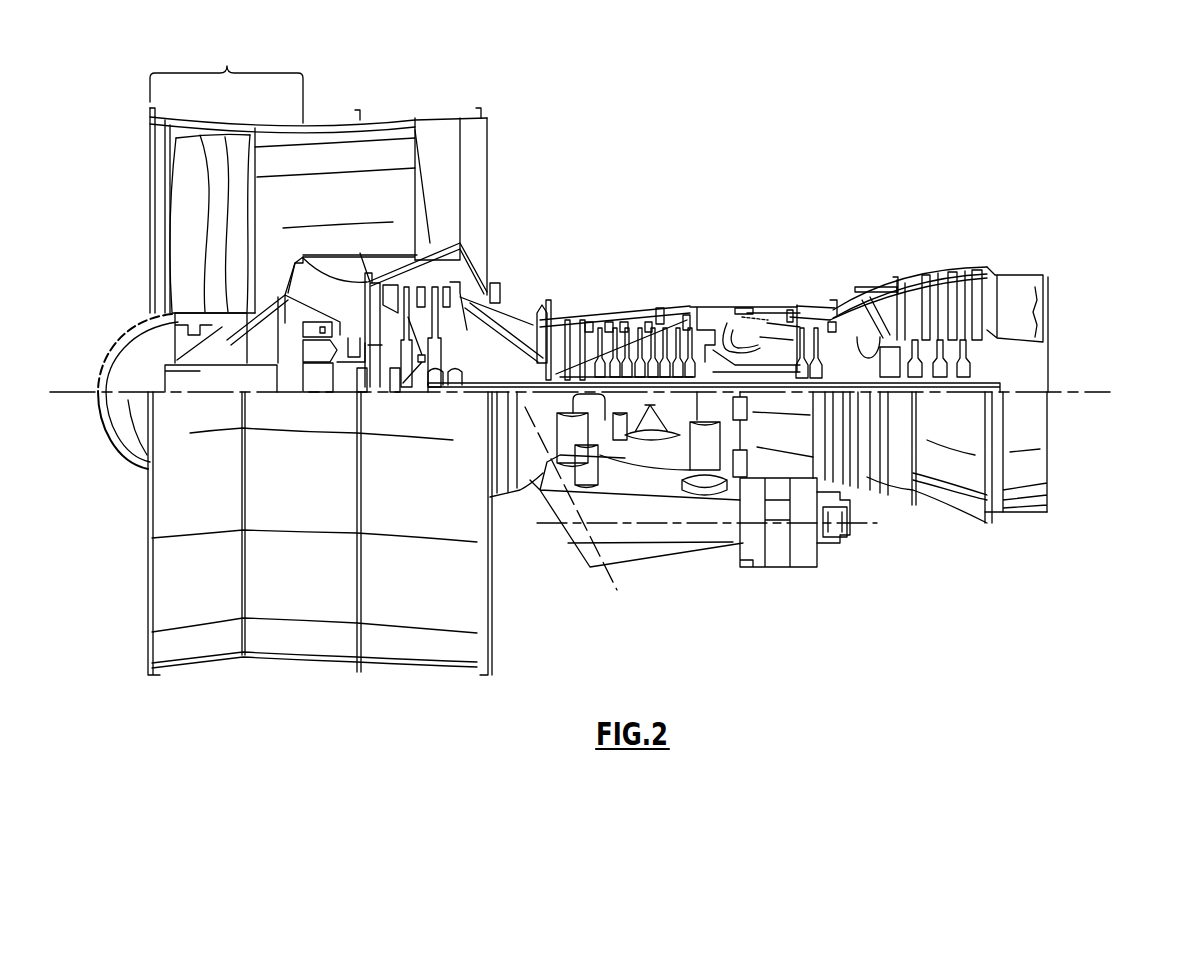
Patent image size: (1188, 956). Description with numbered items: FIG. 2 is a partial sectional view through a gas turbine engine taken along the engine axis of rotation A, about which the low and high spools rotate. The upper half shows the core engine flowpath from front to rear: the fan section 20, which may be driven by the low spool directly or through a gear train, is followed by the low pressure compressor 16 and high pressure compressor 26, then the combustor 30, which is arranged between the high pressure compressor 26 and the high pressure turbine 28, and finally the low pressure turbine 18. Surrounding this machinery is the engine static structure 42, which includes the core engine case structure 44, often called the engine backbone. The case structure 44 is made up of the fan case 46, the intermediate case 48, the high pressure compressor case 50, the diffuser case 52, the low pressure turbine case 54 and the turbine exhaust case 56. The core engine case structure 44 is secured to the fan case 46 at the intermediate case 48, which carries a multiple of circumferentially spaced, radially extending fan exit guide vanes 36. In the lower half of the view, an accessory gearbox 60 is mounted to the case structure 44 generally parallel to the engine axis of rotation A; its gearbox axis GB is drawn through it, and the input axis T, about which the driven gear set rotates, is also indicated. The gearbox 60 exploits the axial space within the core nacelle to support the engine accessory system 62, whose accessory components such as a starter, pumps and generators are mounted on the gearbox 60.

The low pressure compressor 16 is at (545, 297).
The low pressure turbine 18 is at (893, 277).
The fan section 20 is at (283, 176).
The high pressure compressor 26 is at (690, 297).
The high pressure turbine 28 is at (837, 297).
The combustor 30 is at (797, 297).
The fan exit guide vanes 36 is at (445, 155).
The engine static structure 42 is at (1095, 547).
The core engine case structure 44 is at (935, 545).
The fan case 46 is at (266, 636).
The intermediate case 48 is at (437, 645).
The high pressure compressor case 50 is at (532, 495).
The diffuser case 52 is at (828, 553).
The low pressure turbine case 54 is at (862, 478).
The turbine exhaust case 56 is at (1008, 523).
The accessory gearbox 60 is at (708, 575).
The engine accessory system 62 is at (788, 593).
The engine axis of rotation A is at (1107, 392).
The input axis T is at (607, 580).
The gearbox axis GB is at (645, 523).